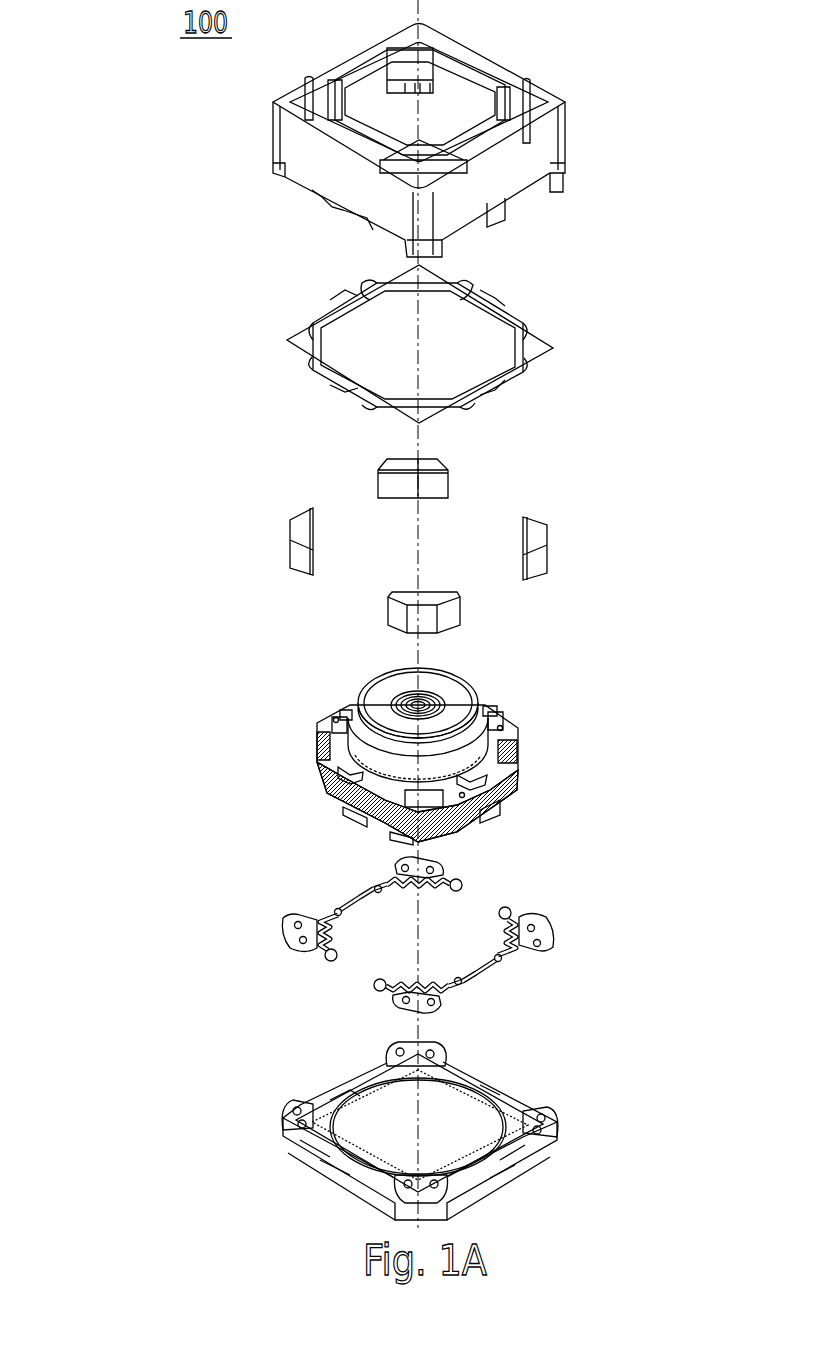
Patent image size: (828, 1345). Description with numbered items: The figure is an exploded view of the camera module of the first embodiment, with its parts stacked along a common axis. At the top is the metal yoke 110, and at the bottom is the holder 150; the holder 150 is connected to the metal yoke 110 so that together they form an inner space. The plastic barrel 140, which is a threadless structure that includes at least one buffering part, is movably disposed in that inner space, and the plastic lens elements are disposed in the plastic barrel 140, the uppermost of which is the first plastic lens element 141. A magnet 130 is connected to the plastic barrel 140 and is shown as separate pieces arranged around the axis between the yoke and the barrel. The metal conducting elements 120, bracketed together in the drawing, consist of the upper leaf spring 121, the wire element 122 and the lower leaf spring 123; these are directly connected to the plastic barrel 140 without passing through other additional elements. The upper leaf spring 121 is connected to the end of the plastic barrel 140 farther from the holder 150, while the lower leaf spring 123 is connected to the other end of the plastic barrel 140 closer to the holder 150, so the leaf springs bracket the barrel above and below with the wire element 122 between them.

The metal yoke 110 is at (553, 143).
The metal conducting elements 120 is at (150, 363).
The upper leaf spring 121 is at (287, 343).
The wire element 122 is at (313, 785).
The lower leaf spring 123 is at (287, 935).
The magnet 130 is at (533, 528).
The plastic barrel 140 is at (515, 722).
The first plastic lens element 141 is at (463, 678).
The holder 150 is at (543, 1112).